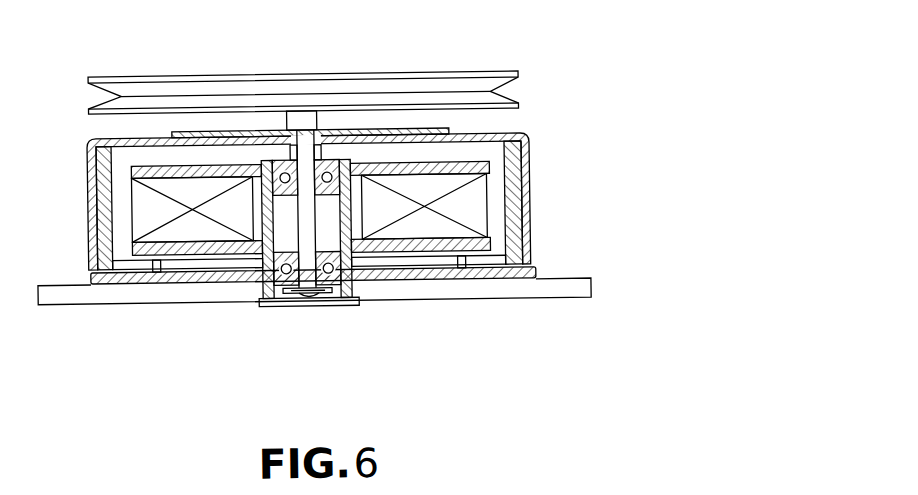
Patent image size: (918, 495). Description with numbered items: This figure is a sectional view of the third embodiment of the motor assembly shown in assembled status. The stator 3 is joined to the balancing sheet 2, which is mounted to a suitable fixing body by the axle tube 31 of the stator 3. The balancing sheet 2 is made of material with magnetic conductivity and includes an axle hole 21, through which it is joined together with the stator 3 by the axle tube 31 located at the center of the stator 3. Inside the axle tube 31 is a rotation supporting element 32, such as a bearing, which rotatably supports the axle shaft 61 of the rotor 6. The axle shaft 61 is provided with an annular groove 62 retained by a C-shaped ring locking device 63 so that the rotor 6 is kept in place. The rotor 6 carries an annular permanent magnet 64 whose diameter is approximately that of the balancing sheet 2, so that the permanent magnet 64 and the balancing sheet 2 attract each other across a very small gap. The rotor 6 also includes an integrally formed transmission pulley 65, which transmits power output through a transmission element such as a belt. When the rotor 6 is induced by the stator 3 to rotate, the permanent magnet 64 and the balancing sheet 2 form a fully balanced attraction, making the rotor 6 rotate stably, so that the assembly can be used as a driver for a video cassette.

The transmission pulley 65 is at (519, 73).
The rotor 6 is at (531, 163).
The permanent magnet 64 is at (513, 208).
The balancing sheet 2 is at (535, 271).
The stator 3 is at (494, 271).
The axle hole 21 is at (259, 278).
The axle shaft 61 is at (305, 232).
The axle tube 31 is at (360, 294).
The rotation supporting element 32 is at (333, 292).
The nut 63 is at (312, 296).
The annular groove 62 is at (312, 296).